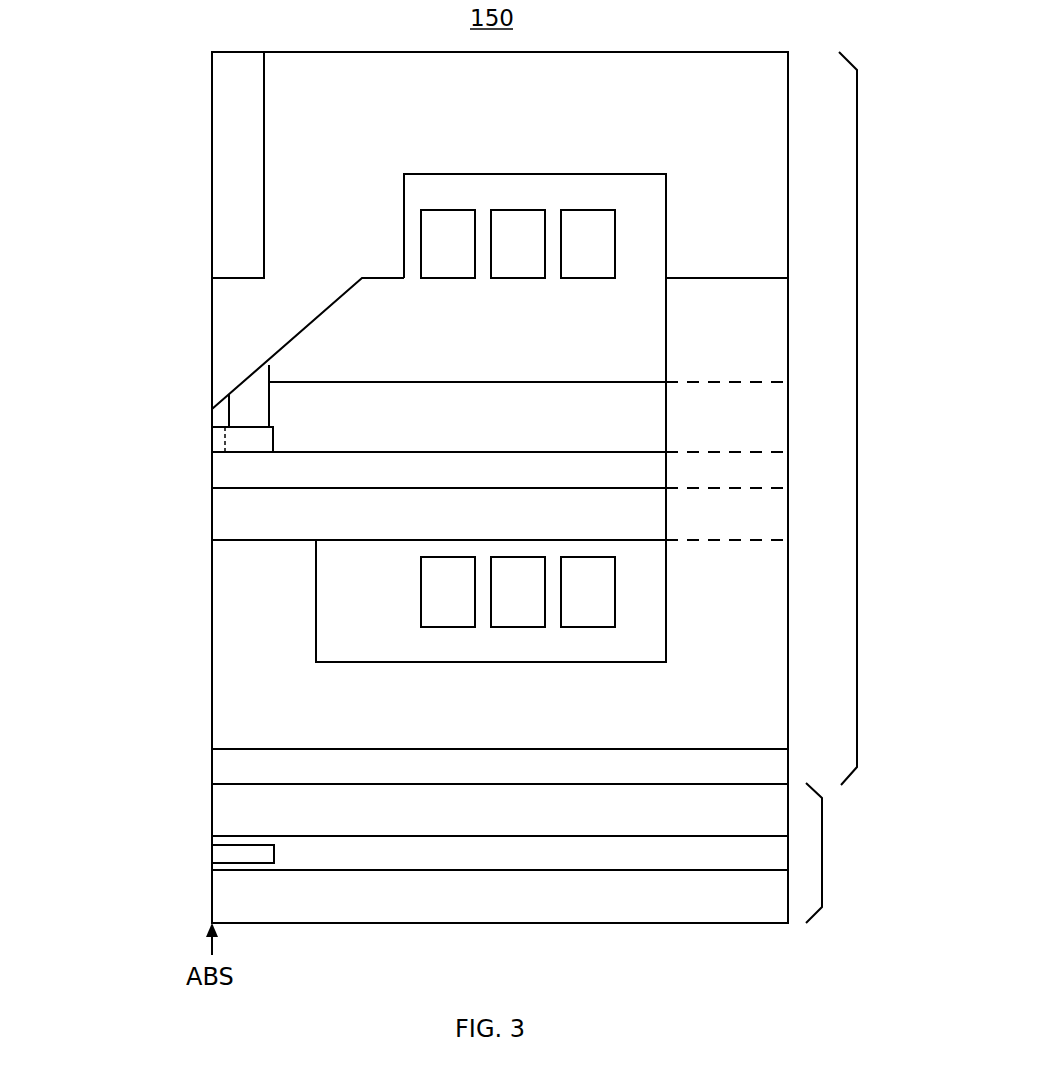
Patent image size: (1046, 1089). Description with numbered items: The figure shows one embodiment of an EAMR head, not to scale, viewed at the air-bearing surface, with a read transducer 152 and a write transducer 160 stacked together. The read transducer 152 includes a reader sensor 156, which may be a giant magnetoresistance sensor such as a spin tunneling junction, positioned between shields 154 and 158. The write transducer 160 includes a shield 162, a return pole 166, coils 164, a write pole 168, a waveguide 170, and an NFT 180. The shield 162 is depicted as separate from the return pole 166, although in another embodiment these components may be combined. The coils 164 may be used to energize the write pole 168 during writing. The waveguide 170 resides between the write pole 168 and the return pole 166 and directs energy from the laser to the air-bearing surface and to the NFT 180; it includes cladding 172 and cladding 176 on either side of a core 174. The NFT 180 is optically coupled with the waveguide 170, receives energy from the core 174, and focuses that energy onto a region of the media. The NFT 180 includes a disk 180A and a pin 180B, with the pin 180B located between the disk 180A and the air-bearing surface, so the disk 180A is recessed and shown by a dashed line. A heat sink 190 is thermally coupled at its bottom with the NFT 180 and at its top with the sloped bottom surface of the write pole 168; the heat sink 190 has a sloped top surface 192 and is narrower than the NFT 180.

The read transducer 152 is at (822, 854).
The shield 154 is at (212, 903).
The reader sensor 156 is at (250, 863).
The shield 158 is at (666, 836).
The write transducer 160 is at (857, 418).
The shield 162 is at (788, 765).
The coil 164 is at (642, 239).
The return pole 166 is at (212, 680).
The write pole 168 is at (788, 174).
The waveguide 170 is at (116, 516).
The cladding 172 is at (212, 502).
The core 174 is at (788, 478).
The cladding 176 is at (788, 425).
The NFT 180 is at (162, 448).
The disk 180A is at (248, 455).
The pin 180B is at (212, 435).
The heat sink 190 is at (235, 385).
The top surface 192 is at (245, 344).